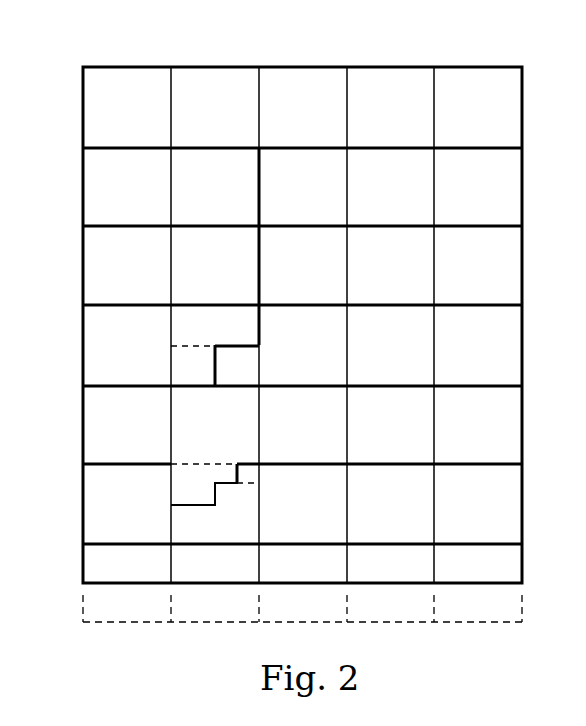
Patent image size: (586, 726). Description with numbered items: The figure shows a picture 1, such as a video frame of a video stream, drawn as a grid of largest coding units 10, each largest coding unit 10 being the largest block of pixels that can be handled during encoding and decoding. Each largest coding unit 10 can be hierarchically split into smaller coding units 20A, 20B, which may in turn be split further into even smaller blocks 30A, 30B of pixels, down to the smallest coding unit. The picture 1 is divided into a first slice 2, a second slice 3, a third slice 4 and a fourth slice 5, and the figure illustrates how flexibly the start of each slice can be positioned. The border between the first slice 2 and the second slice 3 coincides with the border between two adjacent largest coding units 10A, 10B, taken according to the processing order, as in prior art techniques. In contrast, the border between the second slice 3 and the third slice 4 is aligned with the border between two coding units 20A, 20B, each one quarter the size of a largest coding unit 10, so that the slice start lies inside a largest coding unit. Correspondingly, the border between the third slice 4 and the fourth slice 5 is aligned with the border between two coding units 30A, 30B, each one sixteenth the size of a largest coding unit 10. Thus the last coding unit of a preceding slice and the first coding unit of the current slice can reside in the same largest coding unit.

The picture 1 is at (301, 67).
The largest coding unit 10 is at (98, 106).
The first slice 2 is at (84, 148).
The second slice 3 is at (85, 304).
The third slice 4 is at (84, 464).
The fourth slice 5 is at (81, 566).
The largest coding unit 10A is at (237, 198).
The largest coding unit 10B is at (325, 198).
The coding unit 20A is at (193, 366).
The coding unit 20B is at (237, 366).
The smaller block of pixels 30A is at (219, 473).
The smaller block of pixels 30B is at (250, 474).